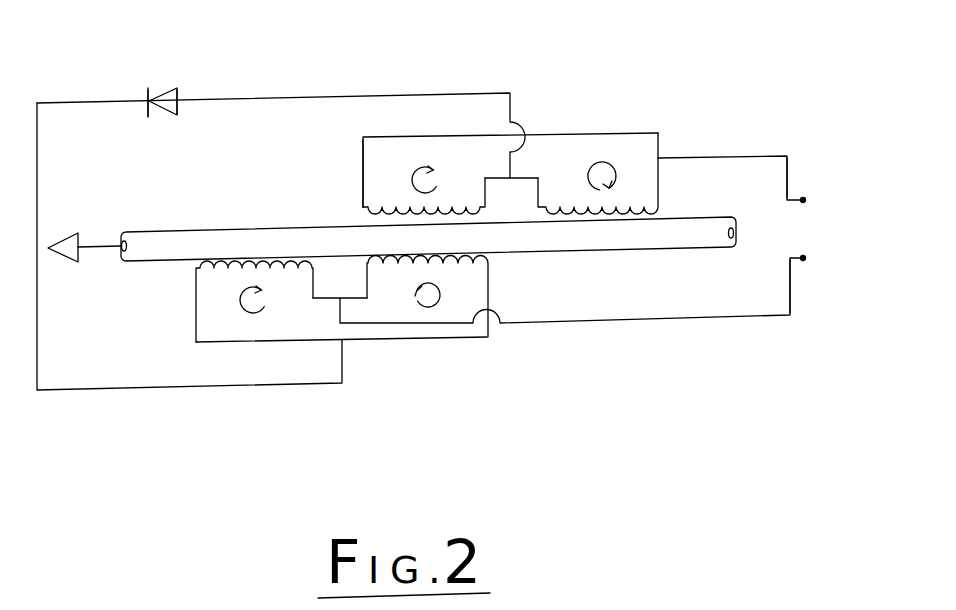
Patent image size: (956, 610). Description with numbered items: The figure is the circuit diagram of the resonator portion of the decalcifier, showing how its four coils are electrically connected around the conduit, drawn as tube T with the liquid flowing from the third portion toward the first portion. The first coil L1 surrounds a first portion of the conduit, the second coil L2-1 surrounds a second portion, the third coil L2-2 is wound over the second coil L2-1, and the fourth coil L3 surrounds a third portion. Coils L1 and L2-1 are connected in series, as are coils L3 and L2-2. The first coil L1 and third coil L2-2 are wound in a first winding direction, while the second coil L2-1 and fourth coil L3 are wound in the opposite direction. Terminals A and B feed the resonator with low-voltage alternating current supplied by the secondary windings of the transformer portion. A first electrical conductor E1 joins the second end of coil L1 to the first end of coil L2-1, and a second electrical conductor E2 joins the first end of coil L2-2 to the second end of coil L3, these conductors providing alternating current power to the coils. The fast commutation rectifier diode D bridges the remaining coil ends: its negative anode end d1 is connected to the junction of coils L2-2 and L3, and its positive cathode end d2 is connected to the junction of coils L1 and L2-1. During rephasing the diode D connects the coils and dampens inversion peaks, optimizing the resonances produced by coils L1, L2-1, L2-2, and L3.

The fast commutation rectifier diode D is at (164, 95).
The anode end of diode d1 is at (181, 113).
The cathode end of diode d2 is at (148, 104).
The first coil L1 is at (296, 278).
The second coil L2-1 is at (397, 267).
The third coil L2-2 is at (408, 208).
The fourth coil L3 is at (583, 200).
The tube T is at (167, 247).
The terminal A is at (823, 199).
The terminal B is at (823, 259).
The first electrical conductor E1 is at (790, 290).
The second electrical conductor E2 is at (787, 170).